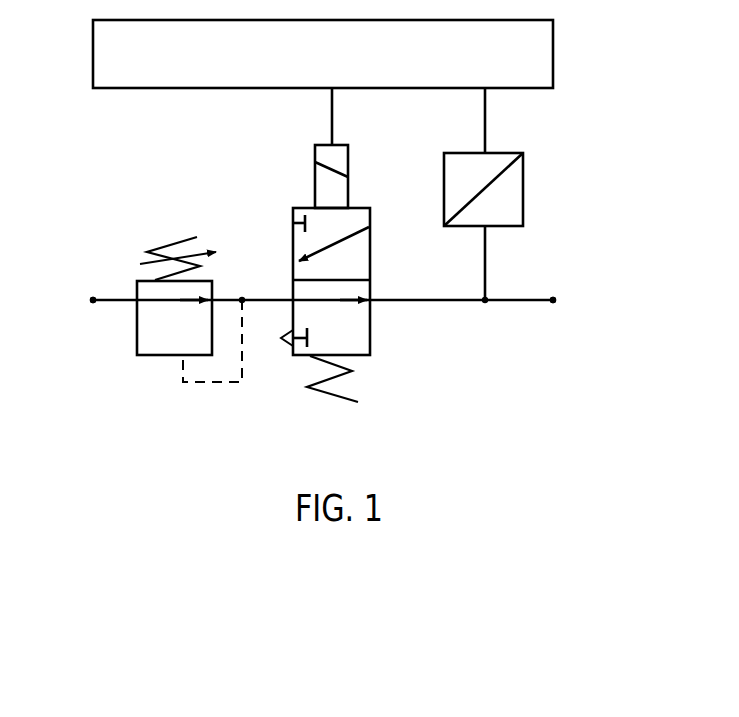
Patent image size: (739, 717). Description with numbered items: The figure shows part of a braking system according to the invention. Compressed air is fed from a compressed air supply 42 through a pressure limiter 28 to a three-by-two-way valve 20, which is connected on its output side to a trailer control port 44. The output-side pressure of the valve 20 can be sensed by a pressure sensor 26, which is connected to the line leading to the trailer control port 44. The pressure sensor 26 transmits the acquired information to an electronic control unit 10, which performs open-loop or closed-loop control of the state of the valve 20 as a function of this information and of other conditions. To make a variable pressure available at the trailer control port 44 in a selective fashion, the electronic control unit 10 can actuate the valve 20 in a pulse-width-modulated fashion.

The electronic control unit 10 is at (553, 47).
The 3/2-way valve 20 is at (370, 330).
The pressure sensor 26 is at (523, 188).
The pressure limiter 28 is at (137, 333).
The compressed air supply 42 is at (93, 299).
The trailer control port 44 is at (553, 301).